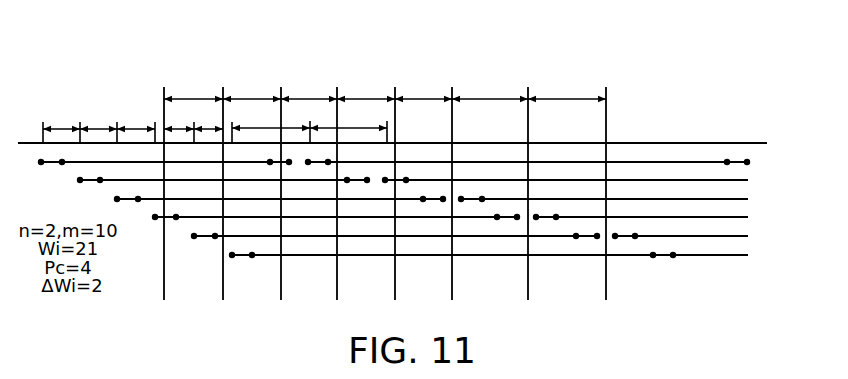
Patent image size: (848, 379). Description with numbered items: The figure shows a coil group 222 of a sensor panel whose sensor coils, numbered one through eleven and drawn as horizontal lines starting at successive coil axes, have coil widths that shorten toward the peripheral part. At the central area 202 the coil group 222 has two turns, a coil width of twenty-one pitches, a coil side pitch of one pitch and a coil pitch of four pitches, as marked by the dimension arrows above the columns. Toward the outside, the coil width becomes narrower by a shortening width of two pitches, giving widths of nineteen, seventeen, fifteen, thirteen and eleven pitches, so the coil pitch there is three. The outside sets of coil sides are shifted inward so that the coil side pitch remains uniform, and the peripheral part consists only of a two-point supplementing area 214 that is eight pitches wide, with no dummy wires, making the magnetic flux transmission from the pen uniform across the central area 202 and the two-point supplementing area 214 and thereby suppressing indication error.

The two-point supplementing area 214 is at (43, 53).
The central area 202 is at (194, 53).
The coil group 222 is at (645, 119).